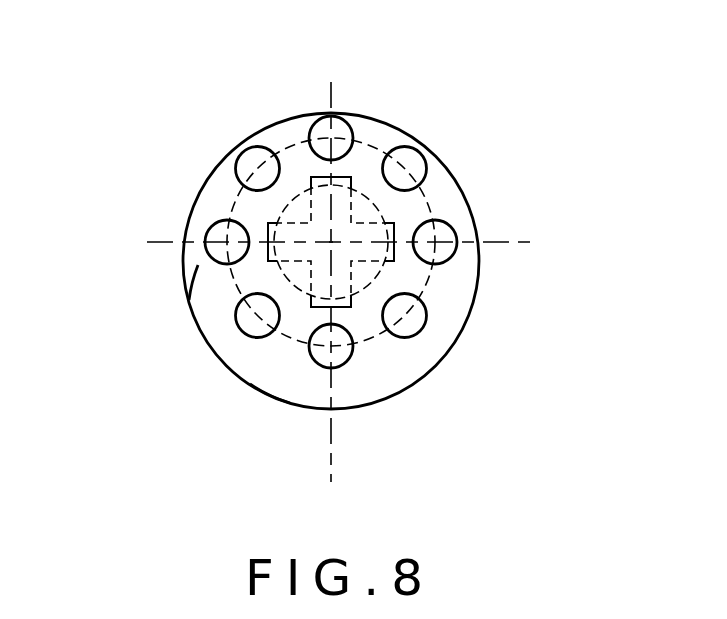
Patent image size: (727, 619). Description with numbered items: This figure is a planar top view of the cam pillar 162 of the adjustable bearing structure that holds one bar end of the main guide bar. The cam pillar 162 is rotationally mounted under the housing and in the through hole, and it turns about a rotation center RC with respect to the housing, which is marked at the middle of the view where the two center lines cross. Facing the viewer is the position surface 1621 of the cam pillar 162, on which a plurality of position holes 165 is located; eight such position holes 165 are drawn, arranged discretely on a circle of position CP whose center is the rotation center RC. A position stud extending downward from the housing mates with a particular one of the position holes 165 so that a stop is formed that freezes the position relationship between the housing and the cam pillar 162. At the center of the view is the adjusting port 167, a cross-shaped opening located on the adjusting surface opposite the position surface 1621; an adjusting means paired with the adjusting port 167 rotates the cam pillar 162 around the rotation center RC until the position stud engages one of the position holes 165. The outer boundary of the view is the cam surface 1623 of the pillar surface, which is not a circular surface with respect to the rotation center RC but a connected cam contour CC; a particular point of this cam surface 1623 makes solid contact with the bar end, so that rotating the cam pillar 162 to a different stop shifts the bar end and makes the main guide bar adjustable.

The cam pillar 162 is at (397, 373).
The position surface 1621 is at (212, 296).
The cam surface 1623 is at (267, 400).
The position holes 165 is at (413, 163).
The adjusting port 167 is at (300, 229).
The cam contour CC is at (357, 113).
The circle of position CP is at (287, 147).
The reference circle CR is at (362, 190).
The rotation center RC is at (334, 241).